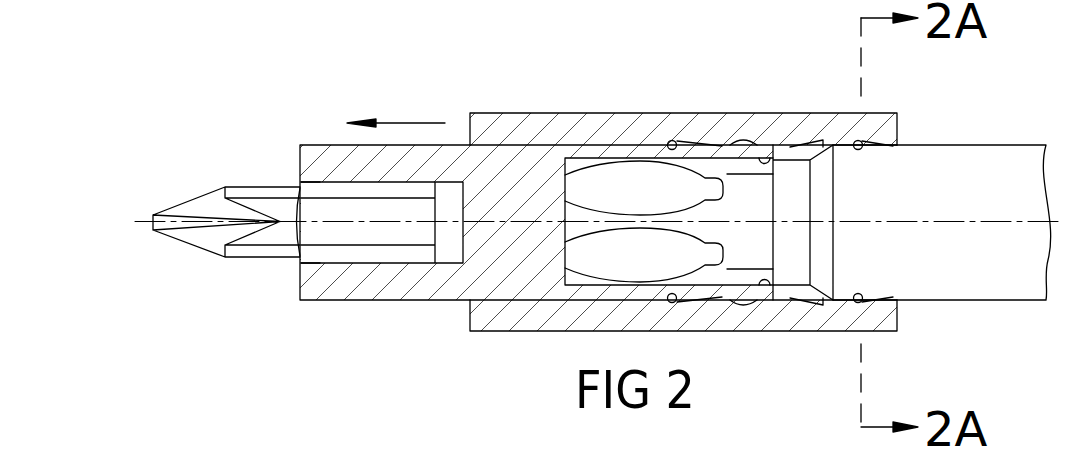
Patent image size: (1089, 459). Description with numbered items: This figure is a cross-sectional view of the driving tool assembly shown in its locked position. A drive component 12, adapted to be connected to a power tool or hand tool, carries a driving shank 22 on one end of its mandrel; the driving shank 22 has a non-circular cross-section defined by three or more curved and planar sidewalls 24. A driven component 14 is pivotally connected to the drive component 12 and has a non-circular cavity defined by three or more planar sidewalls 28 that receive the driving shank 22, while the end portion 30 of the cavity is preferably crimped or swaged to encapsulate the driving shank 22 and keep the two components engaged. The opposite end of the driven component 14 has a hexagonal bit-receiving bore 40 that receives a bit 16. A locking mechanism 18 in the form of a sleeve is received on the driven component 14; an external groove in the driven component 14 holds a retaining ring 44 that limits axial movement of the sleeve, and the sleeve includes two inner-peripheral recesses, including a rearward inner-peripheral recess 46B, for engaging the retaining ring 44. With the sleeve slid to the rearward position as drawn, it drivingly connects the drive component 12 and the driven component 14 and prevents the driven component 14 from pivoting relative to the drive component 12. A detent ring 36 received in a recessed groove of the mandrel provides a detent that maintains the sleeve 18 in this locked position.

The drive component 12 is at (1005, 302).
The driven component 14 is at (437, 302).
The drill bit 16 is at (218, 235).
The locking mechanism 18 is at (637, 113).
The driving shank 22 is at (580, 176).
The curved and planar sidewalls 24 is at (600, 265).
The planar sidewalls 28 is at (677, 303).
The end portion 30 is at (765, 157).
The detent ring 36 is at (860, 150).
The hexagonal bit-receiving bore 40 is at (318, 190).
The retaining ring 44 is at (669, 302).
The rearward inner-peripheral recess 46B is at (820, 300).